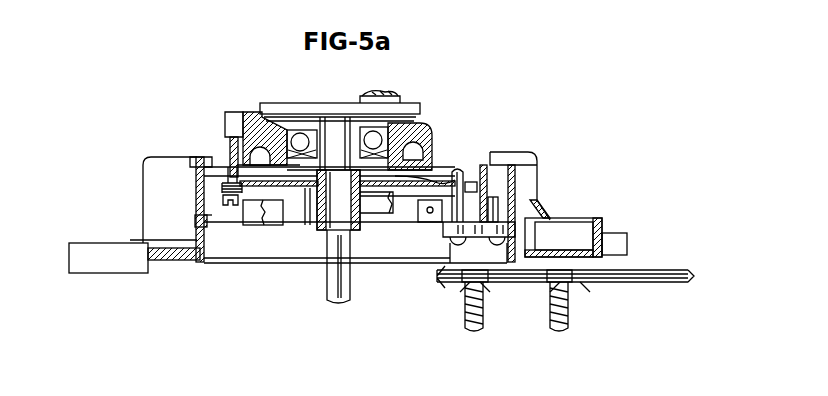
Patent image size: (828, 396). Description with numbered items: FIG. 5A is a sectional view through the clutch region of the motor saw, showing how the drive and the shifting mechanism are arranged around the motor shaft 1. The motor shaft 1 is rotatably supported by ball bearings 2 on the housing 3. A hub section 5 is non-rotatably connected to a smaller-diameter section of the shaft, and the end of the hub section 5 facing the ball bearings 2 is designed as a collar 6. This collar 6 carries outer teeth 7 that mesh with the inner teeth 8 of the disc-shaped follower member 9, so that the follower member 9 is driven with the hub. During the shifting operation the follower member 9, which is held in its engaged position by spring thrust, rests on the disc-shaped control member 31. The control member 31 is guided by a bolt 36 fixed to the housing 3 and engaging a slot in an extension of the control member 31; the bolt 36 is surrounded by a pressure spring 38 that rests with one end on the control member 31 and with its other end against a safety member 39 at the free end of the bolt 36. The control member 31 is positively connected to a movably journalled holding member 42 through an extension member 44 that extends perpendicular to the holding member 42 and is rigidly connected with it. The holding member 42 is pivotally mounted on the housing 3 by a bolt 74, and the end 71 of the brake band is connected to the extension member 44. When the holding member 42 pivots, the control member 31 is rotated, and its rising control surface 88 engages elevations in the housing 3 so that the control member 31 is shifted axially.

The motor shaft 1 is at (343, 140).
The ball bearings 2 is at (403, 108).
The housing 3 is at (437, 125).
The hub section 5 is at (315, 203).
The collar 6 is at (424, 162).
The outer teeth 7 is at (443, 182).
The inner teeth 8 is at (372, 215).
The follower member 9 is at (392, 215).
The control member 31 is at (273, 193).
The bolt 36 is at (227, 207).
The pressure spring 38 is at (222, 190).
The safety member 39 is at (228, 198).
The holding member 42 is at (478, 238).
The extension member 44 is at (470, 185).
The end of brake band 71 is at (430, 222).
The bolt 74 is at (537, 168).
The control surface 88 is at (495, 182).